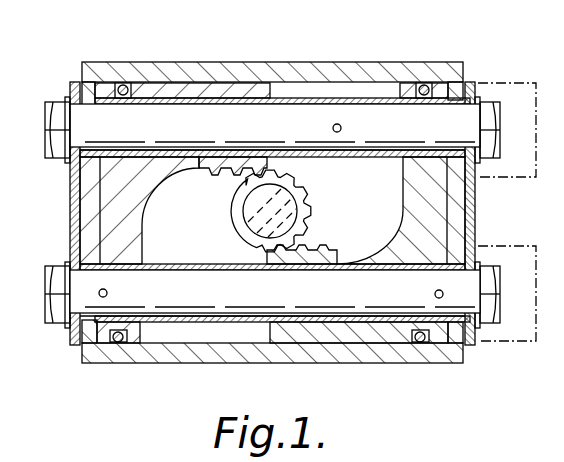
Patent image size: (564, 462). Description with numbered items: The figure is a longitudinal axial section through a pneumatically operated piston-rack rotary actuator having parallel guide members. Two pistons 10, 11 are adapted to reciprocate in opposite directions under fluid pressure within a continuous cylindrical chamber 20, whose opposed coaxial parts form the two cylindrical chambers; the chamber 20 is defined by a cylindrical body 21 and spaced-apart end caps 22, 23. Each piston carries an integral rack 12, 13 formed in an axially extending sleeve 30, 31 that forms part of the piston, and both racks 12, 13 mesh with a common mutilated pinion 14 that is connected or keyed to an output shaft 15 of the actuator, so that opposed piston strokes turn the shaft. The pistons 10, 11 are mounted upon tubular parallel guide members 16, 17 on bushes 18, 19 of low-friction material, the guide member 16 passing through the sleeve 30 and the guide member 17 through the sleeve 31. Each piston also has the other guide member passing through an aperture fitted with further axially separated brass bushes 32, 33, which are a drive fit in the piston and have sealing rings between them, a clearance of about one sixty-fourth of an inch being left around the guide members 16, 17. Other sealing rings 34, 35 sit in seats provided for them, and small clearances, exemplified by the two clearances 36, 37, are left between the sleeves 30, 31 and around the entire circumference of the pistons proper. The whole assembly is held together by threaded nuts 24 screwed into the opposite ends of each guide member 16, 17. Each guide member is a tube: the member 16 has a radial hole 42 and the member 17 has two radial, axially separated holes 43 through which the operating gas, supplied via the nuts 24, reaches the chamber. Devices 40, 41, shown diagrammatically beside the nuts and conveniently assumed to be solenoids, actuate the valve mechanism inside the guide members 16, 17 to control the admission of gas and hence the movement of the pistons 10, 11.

The piston 10 is at (142, 237).
The piston 11 is at (404, 190).
The integral rack 12 is at (215, 172).
The integral rack 13 is at (322, 254).
The mutilated pinion 14 is at (233, 188).
The output shaft 15 is at (300, 208).
The guide member 16 is at (271, 139).
The guide member 17 is at (271, 300).
The bush 18 is at (173, 97).
The bush 19 is at (344, 328).
The cylindrical chamber 20 is at (298, 84).
The cylindrical body 21 is at (361, 70).
The end cap 22 is at (90, 75).
The end cap 23 is at (462, 68).
The threaded nut 24 is at (53, 268).
The axially extending sleeve 30 is at (249, 86).
The axially extending sleeve 31 is at (327, 334).
The axially separated bush 32 is at (97, 331).
The axially separated bush 33 is at (397, 96).
The sealing ring 34 is at (123, 84).
The sealing ring 35 is at (420, 340).
The clearance 36 is at (133, 344).
The clearance 37 is at (292, 348).
The actuating device 40 is at (523, 181).
The actuating device 41 is at (520, 349).
The radial hole 42 is at (341, 128).
The radial holes 43 is at (107, 292).